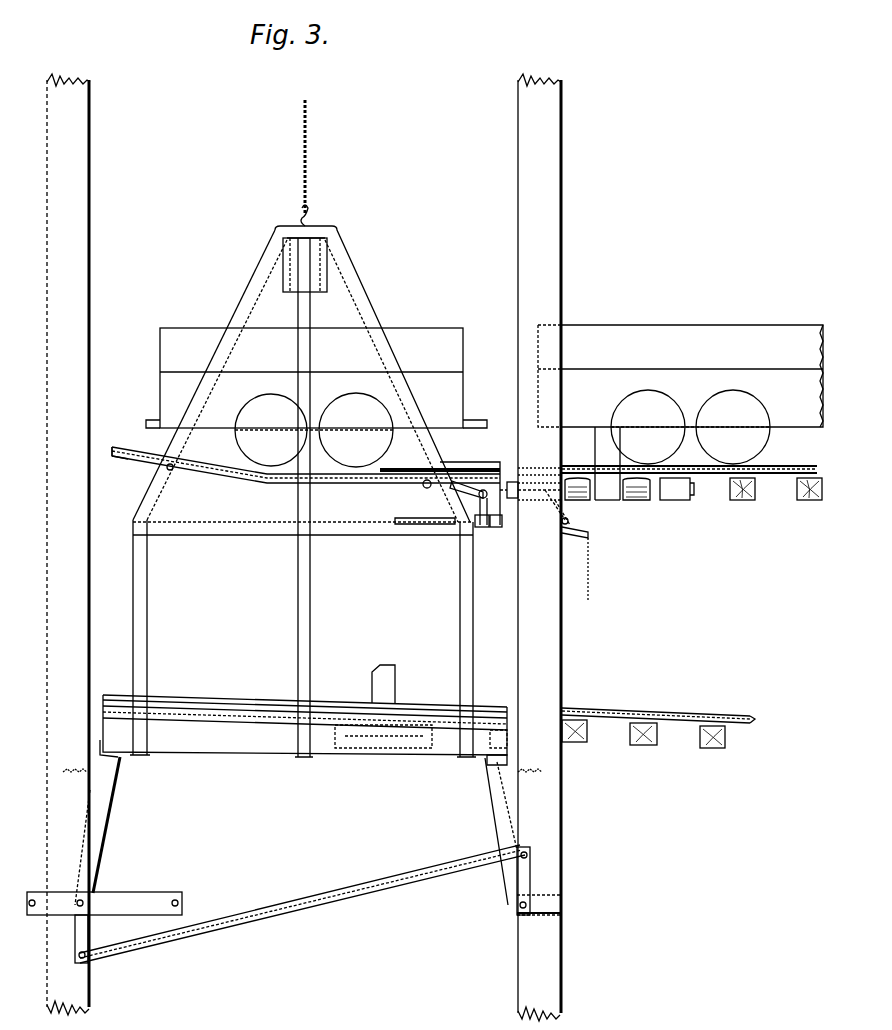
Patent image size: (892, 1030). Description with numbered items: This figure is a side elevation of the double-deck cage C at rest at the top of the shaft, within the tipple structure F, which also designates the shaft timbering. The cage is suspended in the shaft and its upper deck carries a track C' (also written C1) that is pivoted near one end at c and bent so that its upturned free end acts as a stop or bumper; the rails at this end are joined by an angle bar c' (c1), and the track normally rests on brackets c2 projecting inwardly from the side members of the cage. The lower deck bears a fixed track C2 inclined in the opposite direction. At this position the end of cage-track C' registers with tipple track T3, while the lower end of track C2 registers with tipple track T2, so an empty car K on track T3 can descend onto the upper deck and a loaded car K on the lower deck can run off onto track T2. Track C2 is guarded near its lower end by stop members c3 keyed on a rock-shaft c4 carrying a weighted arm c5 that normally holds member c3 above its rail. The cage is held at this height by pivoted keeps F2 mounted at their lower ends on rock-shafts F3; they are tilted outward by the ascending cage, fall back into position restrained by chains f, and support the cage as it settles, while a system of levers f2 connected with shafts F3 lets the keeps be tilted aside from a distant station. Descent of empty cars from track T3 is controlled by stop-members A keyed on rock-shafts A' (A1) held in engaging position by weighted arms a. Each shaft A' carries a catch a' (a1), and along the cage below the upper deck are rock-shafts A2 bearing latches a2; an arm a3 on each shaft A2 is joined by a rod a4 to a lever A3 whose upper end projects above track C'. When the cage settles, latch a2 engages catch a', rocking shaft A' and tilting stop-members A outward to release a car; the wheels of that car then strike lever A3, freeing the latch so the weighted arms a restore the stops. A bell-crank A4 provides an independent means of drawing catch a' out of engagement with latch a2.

The tipple structure F is at (95, 172).
The cage C is at (303, 491).
The upper deck track C' is at (306, 479).
The upper deck track C1 is at (215, 482).
The angle bar c' is at (117, 469).
The angle bar c1 is at (114, 460).
The brackets c2 is at (172, 470).
The car K is at (484, 396).
The lever A3 is at (395, 463).
The rock-shaft A2 is at (412, 514).
The pivot of track C' c is at (430, 492).
The rod a4 is at (468, 497).
The arm a3 is at (482, 528).
The latch a2 is at (498, 528).
The catch a' is at (531, 506).
The catch a1 is at (512, 500).
The tipple track T3 is at (700, 490).
The stop-members A is at (593, 463).
The rock-shaft A' is at (607, 510).
The rock-shaft A1 is at (637, 503).
The weighted arm a is at (677, 508).
The bell-crank A4 is at (582, 525).
The lower deck track C2 is at (225, 696).
The stop member c3 is at (384, 684).
The rock-shaft c4 is at (433, 745).
The weighted arm c5 is at (507, 738).
The tipple track T2 is at (680, 718).
The pivoted keeps F2 is at (105, 820).
The rock-shafts F3 is at (90, 898).
The levers f2 is at (145, 893).
The chains f is at (80, 775).